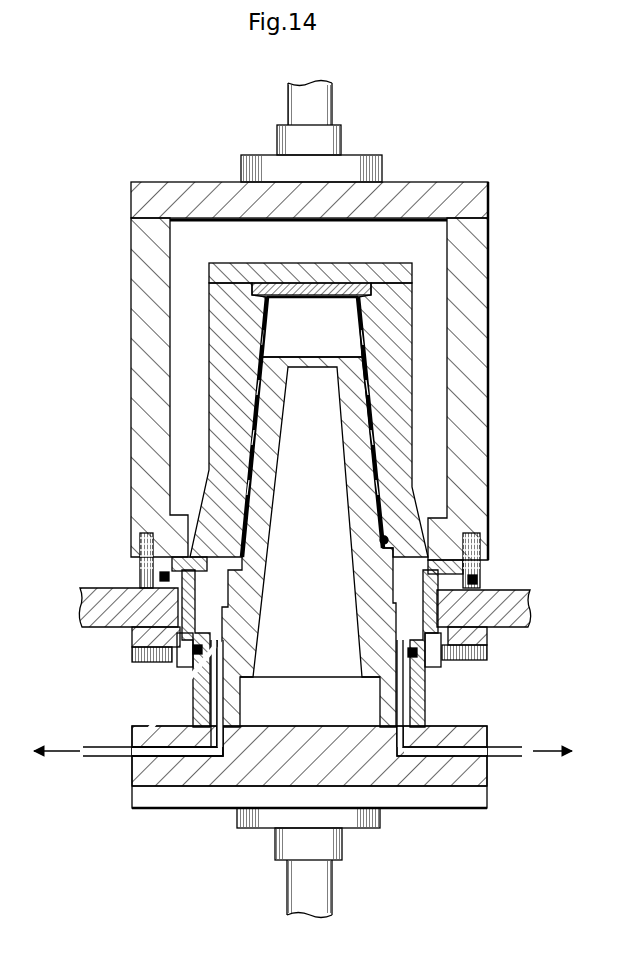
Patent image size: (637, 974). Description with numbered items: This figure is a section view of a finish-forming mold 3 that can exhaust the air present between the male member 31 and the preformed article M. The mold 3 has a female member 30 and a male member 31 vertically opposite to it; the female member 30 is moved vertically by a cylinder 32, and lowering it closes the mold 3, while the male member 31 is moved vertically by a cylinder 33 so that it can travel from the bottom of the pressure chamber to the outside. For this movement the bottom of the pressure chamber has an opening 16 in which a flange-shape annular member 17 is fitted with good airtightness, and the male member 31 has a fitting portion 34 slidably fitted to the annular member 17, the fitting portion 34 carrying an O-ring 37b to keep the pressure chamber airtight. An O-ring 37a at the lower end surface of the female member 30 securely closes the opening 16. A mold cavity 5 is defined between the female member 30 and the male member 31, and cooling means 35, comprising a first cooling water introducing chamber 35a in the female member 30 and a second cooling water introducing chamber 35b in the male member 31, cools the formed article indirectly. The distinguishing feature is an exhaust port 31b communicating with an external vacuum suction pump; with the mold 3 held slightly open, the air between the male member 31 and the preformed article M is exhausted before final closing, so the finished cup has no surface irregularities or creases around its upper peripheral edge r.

The finish-forming mold 3 is at (491, 259).
The mold cavity 5 is at (345, 320).
The opening 16 is at (432, 656).
The flange-shape annular member 17 is at (440, 670).
The female member 30 is at (466, 340).
The male member 31 is at (449, 778).
The exhaust port 31b is at (178, 758).
The cylinder 32 is at (334, 135).
The cylinder 33 is at (328, 898).
The fitting portion 34 is at (425, 696).
The cooling means 35 is at (226, 495).
The first cooling water introducing chamber 35a is at (186, 357).
The second cooling water introducing chamber 35b is at (303, 437).
The O-ring 37a is at (165, 604).
The O-ring 37b is at (182, 658).
The preformed article M is at (268, 322).
The upper peripheral edge r is at (390, 543).